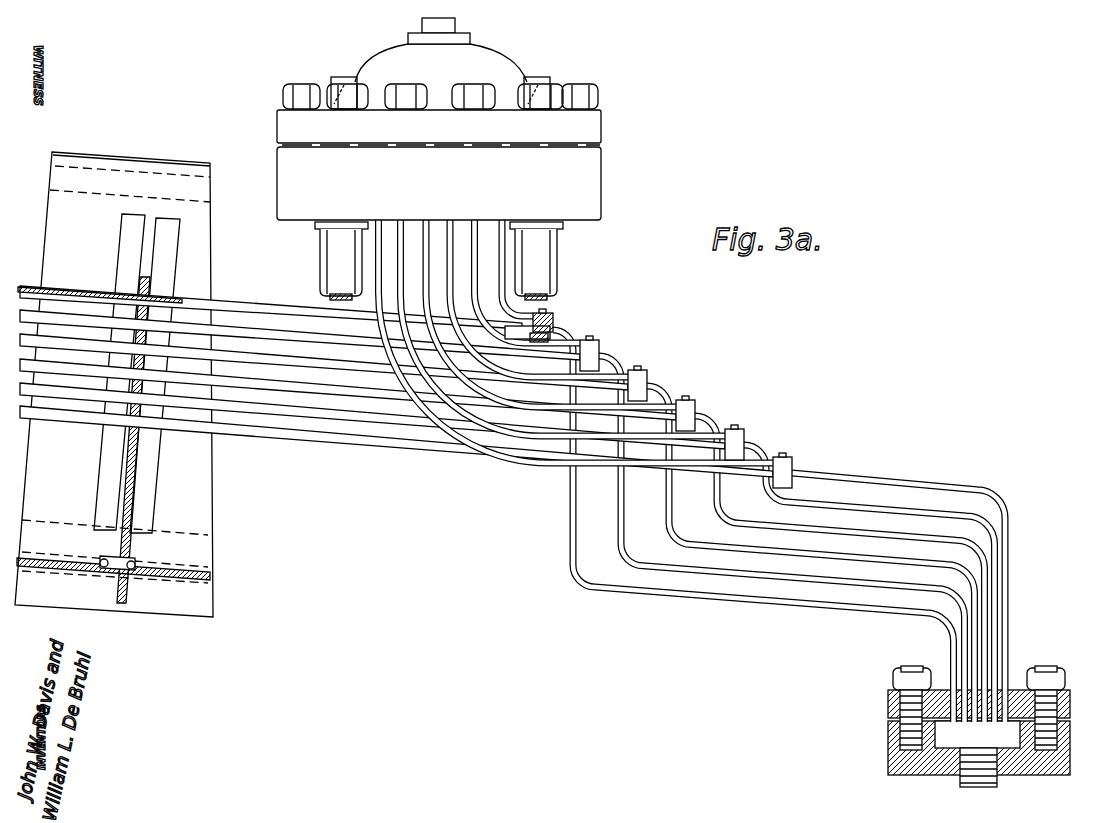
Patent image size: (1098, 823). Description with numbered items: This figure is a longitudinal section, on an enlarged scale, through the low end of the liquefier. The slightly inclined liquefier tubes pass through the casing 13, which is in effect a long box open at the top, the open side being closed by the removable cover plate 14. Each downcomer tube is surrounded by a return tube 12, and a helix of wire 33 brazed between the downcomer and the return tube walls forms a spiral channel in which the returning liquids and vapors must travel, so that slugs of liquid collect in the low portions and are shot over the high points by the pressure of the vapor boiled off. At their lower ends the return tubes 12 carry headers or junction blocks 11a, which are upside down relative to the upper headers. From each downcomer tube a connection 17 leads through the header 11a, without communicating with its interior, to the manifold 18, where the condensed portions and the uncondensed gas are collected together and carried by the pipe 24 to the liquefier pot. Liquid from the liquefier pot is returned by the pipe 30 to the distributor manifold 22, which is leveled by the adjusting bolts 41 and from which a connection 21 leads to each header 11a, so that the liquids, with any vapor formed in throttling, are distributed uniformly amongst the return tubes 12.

The pipe 30 is at (455, 26).
The distributor manifold 22 is at (600, 200).
The connection 21 is at (450, 255).
The adjusting bolt 41 is at (600, 292).
The casing 13 is at (126, 384).
The helix of wire 33 is at (180, 297).
The return tube 12 is at (268, 365).
The header 11a is at (722, 400).
The connection 17 is at (765, 525).
The cover plate 14 is at (185, 565).
The manifold 18 is at (888, 752).
The pipe 24 is at (998, 783).